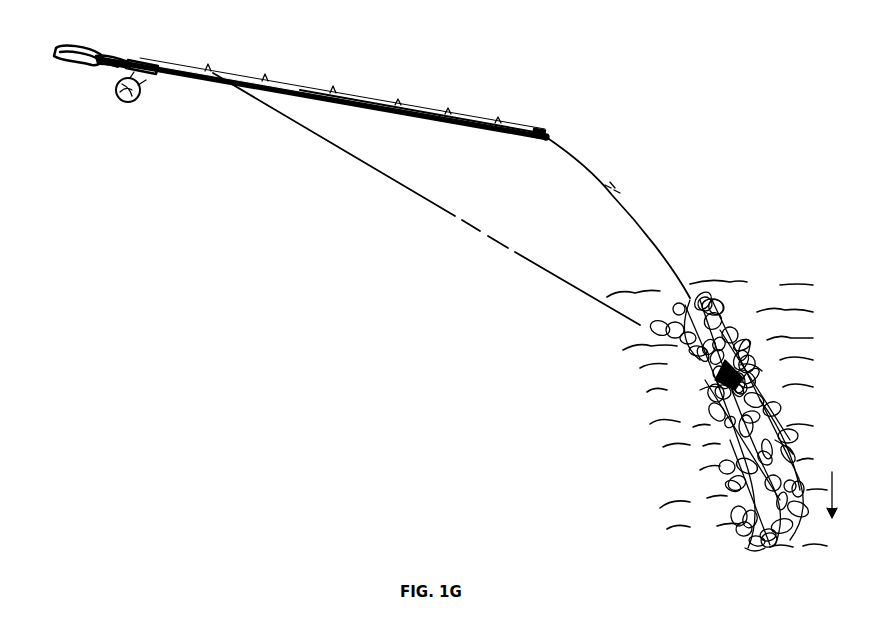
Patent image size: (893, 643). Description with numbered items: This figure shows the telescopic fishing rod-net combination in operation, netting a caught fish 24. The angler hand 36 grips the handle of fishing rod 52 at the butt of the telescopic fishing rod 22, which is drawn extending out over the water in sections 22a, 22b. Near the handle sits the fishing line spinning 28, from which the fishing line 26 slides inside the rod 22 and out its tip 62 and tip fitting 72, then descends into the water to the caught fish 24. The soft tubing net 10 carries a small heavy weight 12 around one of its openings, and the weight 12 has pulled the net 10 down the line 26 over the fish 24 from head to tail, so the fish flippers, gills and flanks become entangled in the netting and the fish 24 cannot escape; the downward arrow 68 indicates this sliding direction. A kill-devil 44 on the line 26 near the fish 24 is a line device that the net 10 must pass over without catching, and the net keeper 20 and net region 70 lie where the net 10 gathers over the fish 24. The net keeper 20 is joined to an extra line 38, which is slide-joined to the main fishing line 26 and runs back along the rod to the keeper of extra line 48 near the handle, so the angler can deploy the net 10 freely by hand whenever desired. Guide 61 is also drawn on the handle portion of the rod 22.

The tubing net 10 is at (730, 480).
The small heavy weight 12 is at (745, 548).
The net keeper 20 is at (740, 360).
The telescopic fishing rod 22 is at (285, 85).
The rod section 22a is at (373, 101).
The rod section 22b is at (490, 123).
The caught fish 24 is at (790, 450).
The fishing line 26 is at (150, 89).
The fishing line spinning 28 is at (135, 98).
The angler hand 36 is at (80, 46).
The extra line 38 is at (537, 268).
The kill-devil 44 is at (705, 392).
The keeper of extra line 48 is at (174, 61).
The handle of fishing rod 52 is at (116, 75).
The handle 61 is at (116, 56).
The rod tip 62 is at (518, 136).
The sinking direction arrow 68 is at (800, 518).
The net mouth 70 is at (760, 372).
The tip connector 72 is at (548, 137).